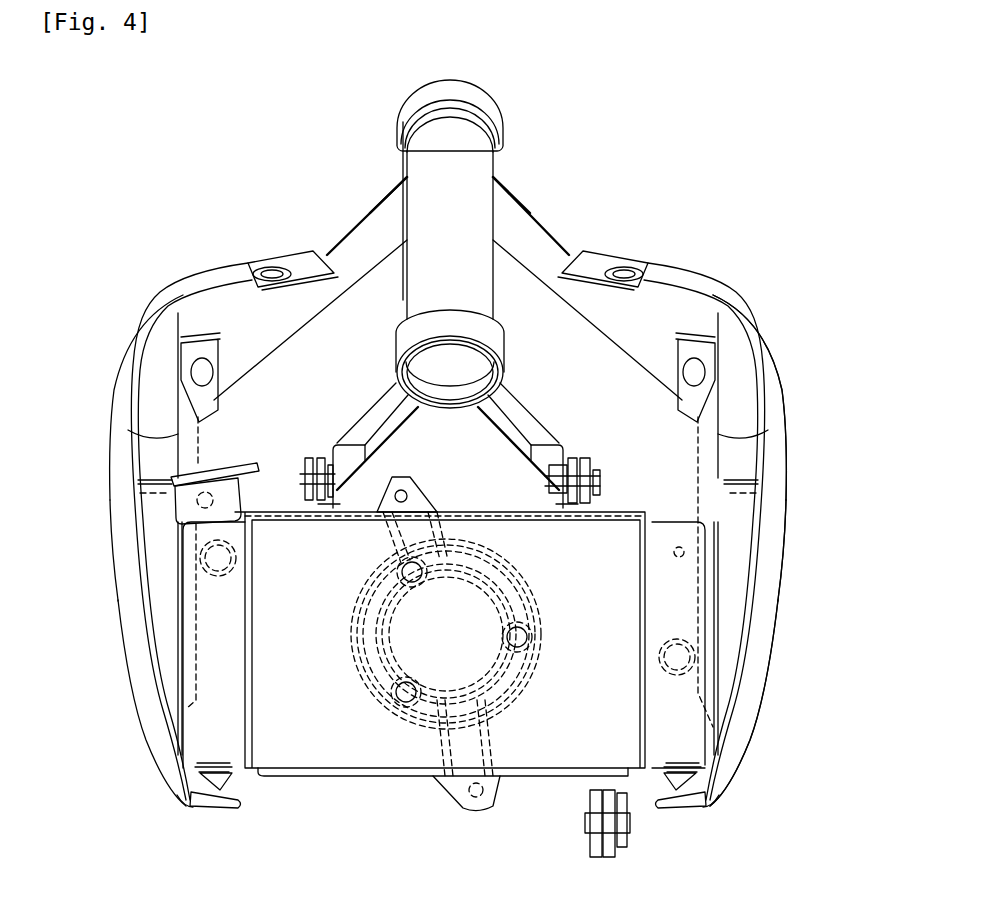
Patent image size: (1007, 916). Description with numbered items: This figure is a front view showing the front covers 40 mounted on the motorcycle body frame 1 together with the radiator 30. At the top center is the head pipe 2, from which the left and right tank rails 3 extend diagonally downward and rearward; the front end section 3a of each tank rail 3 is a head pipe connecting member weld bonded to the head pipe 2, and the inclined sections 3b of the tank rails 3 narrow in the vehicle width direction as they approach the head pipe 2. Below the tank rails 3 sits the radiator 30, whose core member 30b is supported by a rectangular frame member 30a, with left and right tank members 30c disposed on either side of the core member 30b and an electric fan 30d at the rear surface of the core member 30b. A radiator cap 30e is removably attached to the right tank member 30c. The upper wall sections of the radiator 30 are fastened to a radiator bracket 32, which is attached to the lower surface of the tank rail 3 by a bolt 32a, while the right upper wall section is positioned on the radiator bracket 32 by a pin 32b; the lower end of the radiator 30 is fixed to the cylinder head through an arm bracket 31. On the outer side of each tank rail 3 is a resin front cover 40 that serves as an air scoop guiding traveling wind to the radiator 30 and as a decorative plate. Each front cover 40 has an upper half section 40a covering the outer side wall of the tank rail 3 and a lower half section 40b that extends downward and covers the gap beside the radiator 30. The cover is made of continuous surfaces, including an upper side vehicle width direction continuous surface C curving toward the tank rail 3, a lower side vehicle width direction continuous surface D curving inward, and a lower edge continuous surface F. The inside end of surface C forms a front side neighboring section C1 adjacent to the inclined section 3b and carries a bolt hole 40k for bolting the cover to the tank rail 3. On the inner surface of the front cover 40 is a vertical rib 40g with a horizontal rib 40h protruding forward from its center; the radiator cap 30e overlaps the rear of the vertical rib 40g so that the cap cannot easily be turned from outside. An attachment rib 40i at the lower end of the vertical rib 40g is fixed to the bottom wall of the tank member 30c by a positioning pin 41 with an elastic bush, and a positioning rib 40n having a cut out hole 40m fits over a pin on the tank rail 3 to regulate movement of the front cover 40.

The body frame 1 is at (331, 110).
The head pipe 2 is at (509, 112).
The tank rail 3 is at (343, 232).
The front end section 3a is at (405, 178).
The inclined section 3b is at (325, 249).
The upper side vehicle width direction continuous surface C is at (219, 283).
The front side neighboring section C1 is at (286, 259).
The lower side vehicle width direction continuous surface D is at (122, 583).
The lower edge continuous surface F is at (222, 809).
The radiator 30 is at (360, 783).
The frame member 30a is at (560, 777).
The core member 30b is at (396, 758).
The tank member 30c is at (185, 641).
The electric fan 30d is at (530, 673).
The radiator cap 30e is at (230, 466).
The arm bracket 31 is at (605, 860).
The radiator bracket 32 is at (347, 440).
The bolt 32a is at (548, 483).
The pin 32b is at (370, 485).
The front cover 40 is at (107, 370).
The upper half section 40a is at (792, 377).
The lower half section 40b is at (768, 639).
The vertical rib 40g is at (182, 433).
The horizontal rib 40h is at (176, 482).
The attachment rib 40i is at (190, 805).
The bolt hole 40k is at (259, 272).
The cut out hole 40m is at (212, 373).
The positioning rib 40n is at (225, 338).
The positioning pin 41 is at (228, 789).